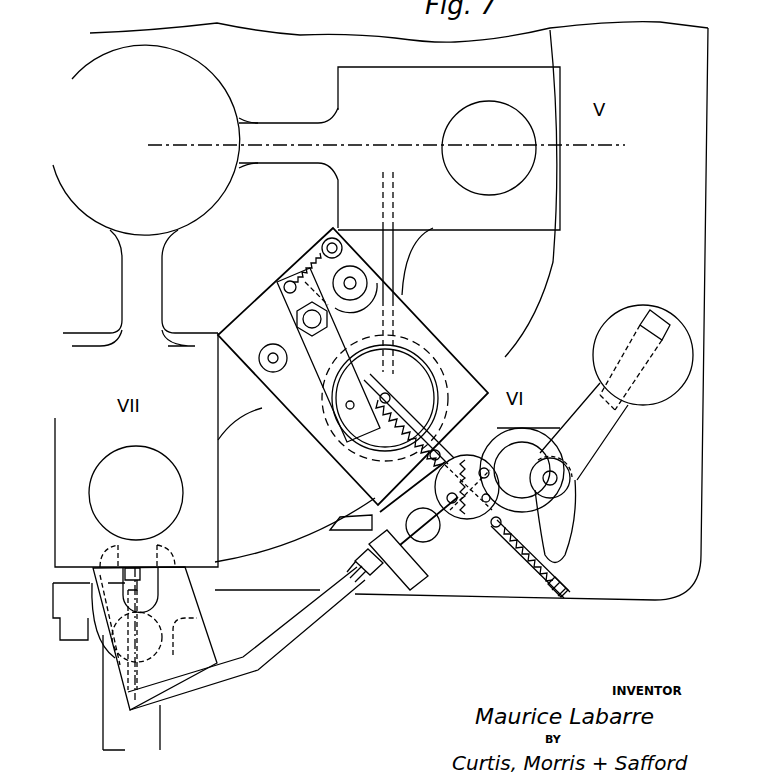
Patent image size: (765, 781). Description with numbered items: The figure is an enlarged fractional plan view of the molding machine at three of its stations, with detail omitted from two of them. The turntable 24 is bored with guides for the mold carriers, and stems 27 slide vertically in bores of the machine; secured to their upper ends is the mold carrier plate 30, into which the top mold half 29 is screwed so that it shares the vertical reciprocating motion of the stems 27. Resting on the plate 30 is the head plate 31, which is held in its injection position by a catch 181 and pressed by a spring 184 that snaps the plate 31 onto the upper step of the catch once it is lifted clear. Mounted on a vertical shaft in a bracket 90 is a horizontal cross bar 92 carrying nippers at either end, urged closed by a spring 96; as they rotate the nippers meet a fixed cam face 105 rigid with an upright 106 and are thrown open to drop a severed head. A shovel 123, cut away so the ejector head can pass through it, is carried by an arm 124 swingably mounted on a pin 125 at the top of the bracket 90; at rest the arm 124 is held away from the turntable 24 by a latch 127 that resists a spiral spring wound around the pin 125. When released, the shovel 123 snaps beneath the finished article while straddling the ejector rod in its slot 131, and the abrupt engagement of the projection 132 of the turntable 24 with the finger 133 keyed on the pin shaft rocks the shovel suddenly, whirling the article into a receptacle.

The turntable 24 is at (150, 450).
The stems 27 is at (353, 277).
The top mold half 29 is at (150, 458).
The mold carrier plate 30 is at (265, 303).
The head plate 31 is at (328, 376).
The bracket 90 is at (470, 530).
The horizontal cross bar 92 is at (470, 462).
The spring 96 is at (527, 557).
The fixed cam face 105 is at (565, 525).
The upright 106 is at (598, 338).
The shovel 123 is at (195, 650).
The arm 124 is at (295, 626).
The pin 125 is at (426, 532).
The latch 127 is at (125, 680).
The slot 131 is at (155, 567).
The projection 132 is at (347, 450).
The finger 133 is at (342, 522).
The catch 181 is at (326, 246).
The spring 184 is at (300, 248).